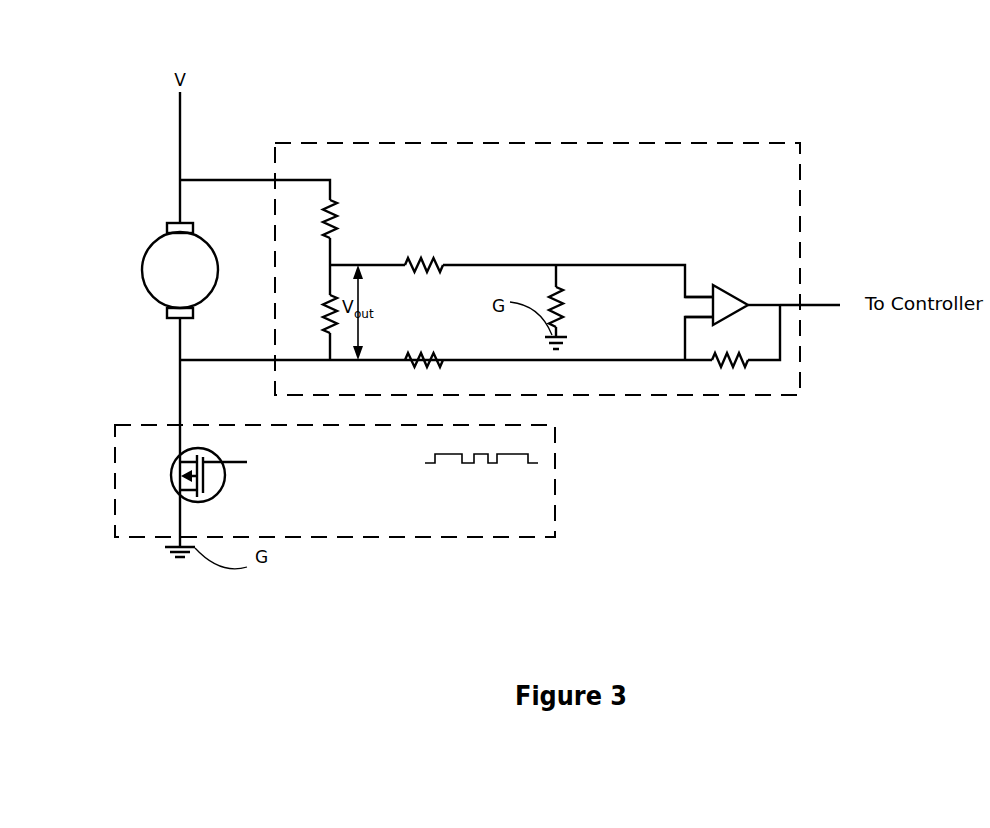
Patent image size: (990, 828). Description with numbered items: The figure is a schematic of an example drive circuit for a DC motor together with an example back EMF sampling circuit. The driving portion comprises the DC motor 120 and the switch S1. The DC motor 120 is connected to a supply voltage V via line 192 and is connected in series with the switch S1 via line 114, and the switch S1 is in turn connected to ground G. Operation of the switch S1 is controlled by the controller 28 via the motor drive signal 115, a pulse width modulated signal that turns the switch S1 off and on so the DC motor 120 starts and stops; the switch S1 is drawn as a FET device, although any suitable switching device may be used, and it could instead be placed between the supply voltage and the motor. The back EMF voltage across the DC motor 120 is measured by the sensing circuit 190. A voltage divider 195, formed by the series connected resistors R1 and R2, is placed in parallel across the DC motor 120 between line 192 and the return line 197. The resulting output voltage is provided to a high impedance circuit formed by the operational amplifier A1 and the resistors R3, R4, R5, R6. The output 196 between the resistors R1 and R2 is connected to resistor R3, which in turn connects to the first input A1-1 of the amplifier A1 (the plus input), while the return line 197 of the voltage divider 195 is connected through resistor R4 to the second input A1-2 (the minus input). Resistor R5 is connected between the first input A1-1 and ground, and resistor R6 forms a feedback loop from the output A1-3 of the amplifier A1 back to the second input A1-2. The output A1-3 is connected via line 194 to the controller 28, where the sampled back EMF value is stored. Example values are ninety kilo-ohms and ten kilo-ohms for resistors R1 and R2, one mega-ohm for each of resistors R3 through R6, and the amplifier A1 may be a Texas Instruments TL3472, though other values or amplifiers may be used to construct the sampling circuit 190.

The line 192 is at (217, 179).
The sampling circuit 190 is at (518, 143).
The voltage divider 195 is at (346, 263).
The output 196 is at (332, 263).
The return line 197 is at (207, 358).
The line 194 is at (815, 303).
The DC motor 120 is at (152, 308).
The line 114 is at (180, 407).
The motor drive signal 115 is at (247, 463).
The controller 28 is at (381, 481).
The resistor R1 is at (340, 216).
The resistor R2 is at (322, 300).
The resistor R3 is at (420, 258).
The resistor R4 is at (420, 355).
The resistor R5 is at (565, 300).
The resistor R6 is at (722, 362).
The operational amplifier A1 is at (733, 290).
The first input A1-1 is at (713, 290).
The second input A1-2 is at (712, 315).
The output A1-3 is at (750, 303).
The switch S1 is at (218, 493).